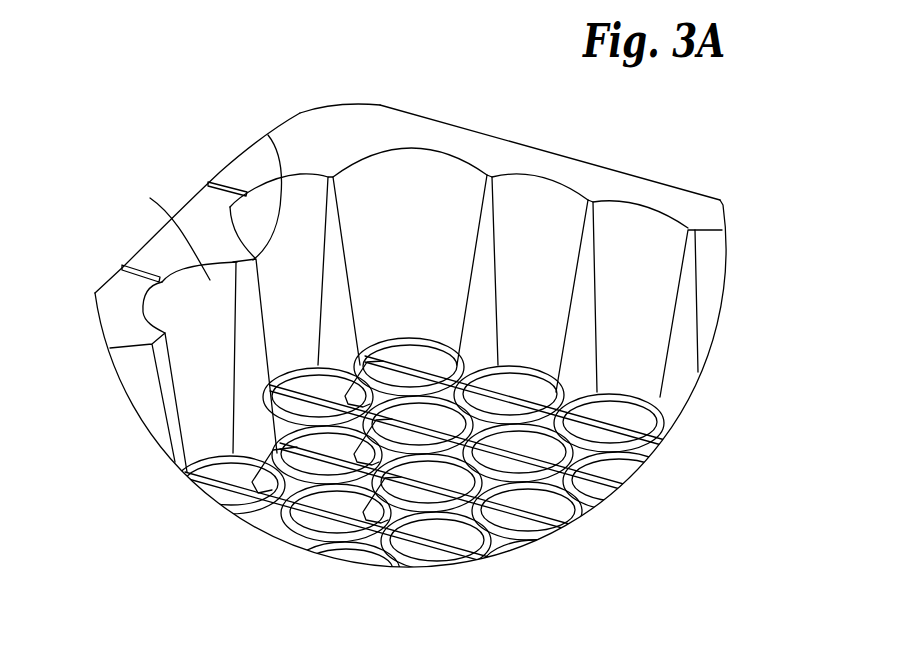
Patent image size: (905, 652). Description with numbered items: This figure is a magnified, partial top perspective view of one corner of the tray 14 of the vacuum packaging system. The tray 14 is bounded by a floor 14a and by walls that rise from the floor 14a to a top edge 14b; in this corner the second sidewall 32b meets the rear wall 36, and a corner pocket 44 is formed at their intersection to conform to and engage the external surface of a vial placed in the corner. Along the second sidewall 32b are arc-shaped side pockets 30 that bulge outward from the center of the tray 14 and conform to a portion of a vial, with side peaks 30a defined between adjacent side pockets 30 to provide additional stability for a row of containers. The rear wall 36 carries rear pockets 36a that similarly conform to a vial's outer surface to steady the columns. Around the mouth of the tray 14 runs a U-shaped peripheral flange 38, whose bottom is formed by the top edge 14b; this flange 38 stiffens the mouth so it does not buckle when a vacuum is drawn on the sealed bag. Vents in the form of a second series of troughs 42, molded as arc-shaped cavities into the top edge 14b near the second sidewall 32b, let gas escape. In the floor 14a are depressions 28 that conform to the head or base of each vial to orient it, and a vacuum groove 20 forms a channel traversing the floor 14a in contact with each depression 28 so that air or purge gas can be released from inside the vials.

The tray 14 is at (293, 110).
The floor 14a is at (530, 547).
The top edge 14b is at (480, 147).
The vacuum groove 20 is at (630, 497).
The depressions 28 is at (393, 552).
The side pockets 30 is at (247, 217).
The side peaks 30a is at (268, 135).
The second sidewall 32b is at (168, 403).
The rear wall 36 is at (587, 235).
The rear pockets 36a is at (650, 232).
The U-shaped peripheral flange 38 is at (584, 161).
The second series of troughs 42 is at (209, 183).
The corner pockets 44 is at (397, 177).